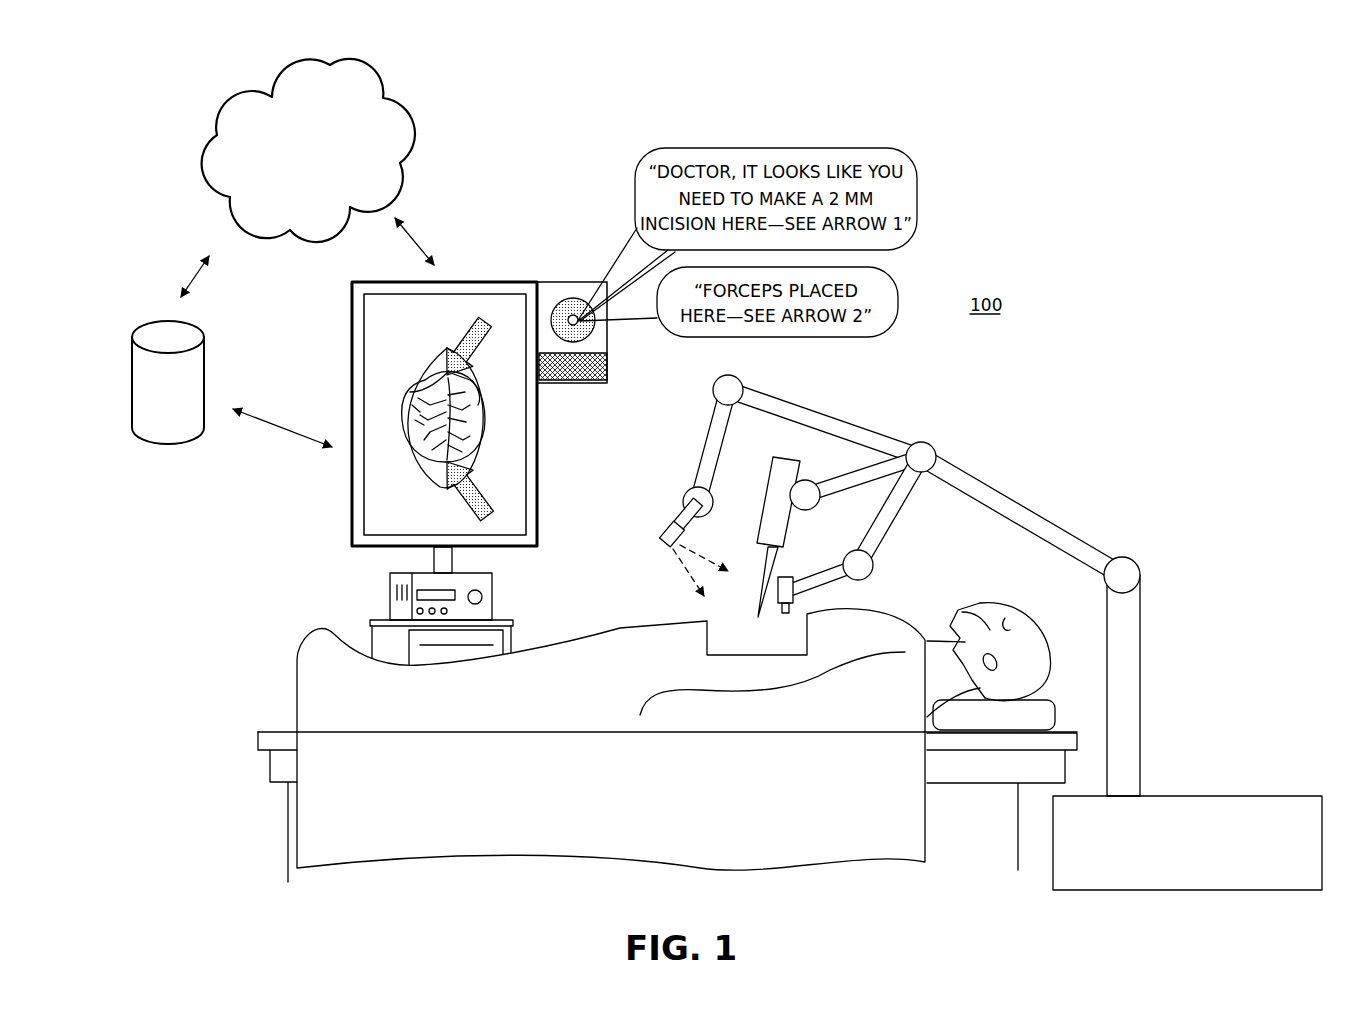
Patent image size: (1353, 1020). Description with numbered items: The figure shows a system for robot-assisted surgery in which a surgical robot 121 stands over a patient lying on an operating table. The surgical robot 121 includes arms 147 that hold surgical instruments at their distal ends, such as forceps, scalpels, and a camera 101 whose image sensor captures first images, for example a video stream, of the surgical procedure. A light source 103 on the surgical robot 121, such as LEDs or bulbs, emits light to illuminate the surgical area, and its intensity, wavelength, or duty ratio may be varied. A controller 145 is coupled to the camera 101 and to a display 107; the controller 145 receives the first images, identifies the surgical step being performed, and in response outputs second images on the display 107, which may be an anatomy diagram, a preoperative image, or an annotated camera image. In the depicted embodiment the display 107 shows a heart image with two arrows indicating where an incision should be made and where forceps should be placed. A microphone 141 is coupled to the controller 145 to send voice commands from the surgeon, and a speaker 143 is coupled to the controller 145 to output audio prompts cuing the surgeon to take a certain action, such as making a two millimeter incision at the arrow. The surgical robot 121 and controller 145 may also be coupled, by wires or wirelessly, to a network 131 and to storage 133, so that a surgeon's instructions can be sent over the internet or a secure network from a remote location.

The camera 101 is at (795, 603).
The light source 103 is at (672, 524).
The display 107 is at (555, 478).
The surgical robot 121 is at (1095, 508).
The network 131 is at (365, 160).
The storage 133 is at (167, 440).
The microphone 141 is at (607, 376).
The speaker 143 is at (601, 330).
The controller 145 is at (392, 612).
The arms 147 is at (783, 393).